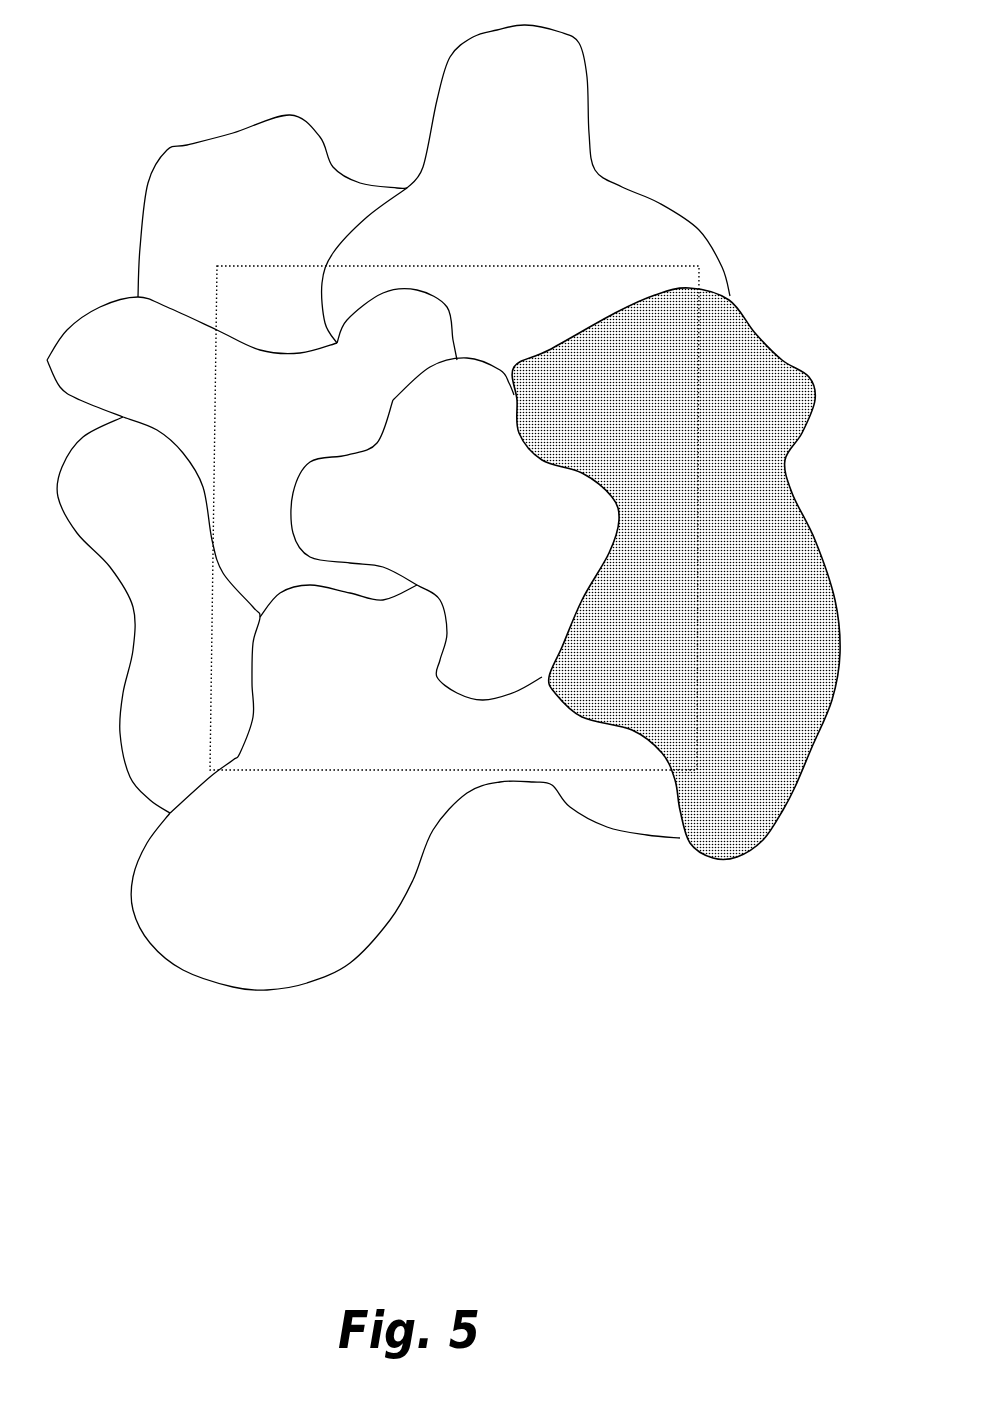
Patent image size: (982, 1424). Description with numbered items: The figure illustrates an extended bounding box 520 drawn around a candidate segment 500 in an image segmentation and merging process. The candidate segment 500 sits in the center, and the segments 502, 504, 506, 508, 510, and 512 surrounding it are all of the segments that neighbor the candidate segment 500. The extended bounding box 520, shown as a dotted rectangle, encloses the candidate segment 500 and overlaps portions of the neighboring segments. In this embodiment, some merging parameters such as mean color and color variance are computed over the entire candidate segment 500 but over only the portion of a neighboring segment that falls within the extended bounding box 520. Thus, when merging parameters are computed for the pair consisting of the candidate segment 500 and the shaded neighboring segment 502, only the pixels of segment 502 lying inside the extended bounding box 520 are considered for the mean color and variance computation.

The candidate segment 500 is at (433, 380).
The neighboring segment 502 is at (654, 313).
The neighboring segment 504 is at (473, 87).
The neighboring segment 506 is at (205, 170).
The neighboring segment 508 is at (97, 342).
The neighboring segment 510 is at (145, 667).
The neighboring segment 512 is at (463, 790).
The extended bounding box 520 is at (699, 377).